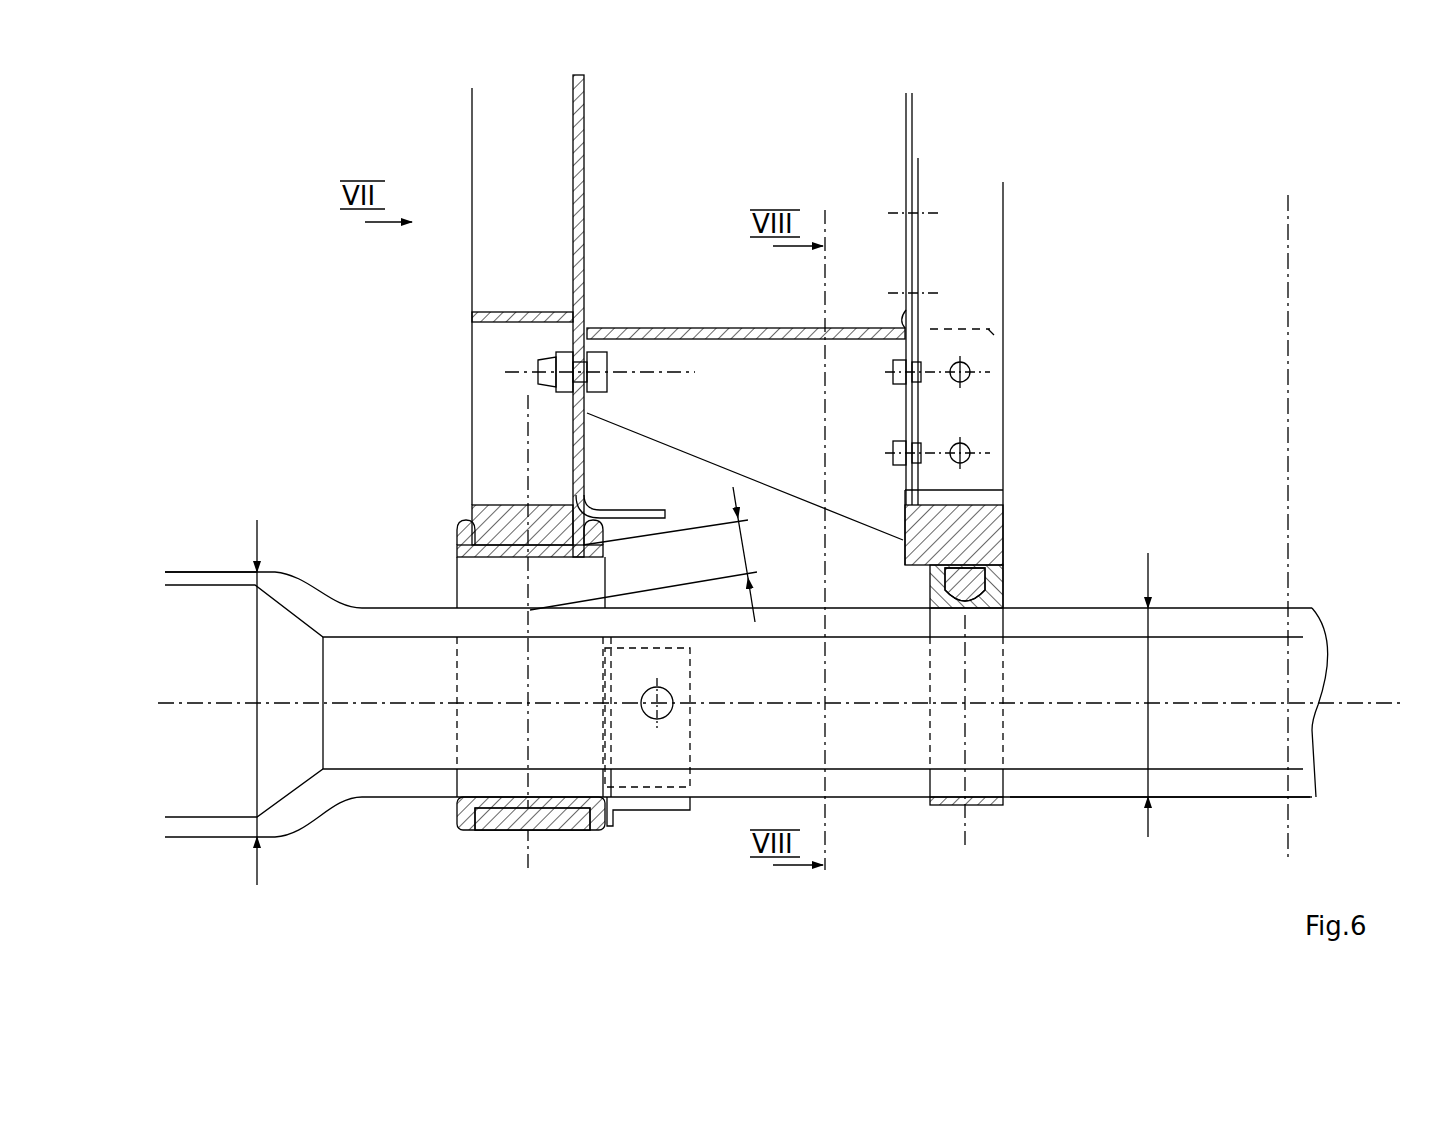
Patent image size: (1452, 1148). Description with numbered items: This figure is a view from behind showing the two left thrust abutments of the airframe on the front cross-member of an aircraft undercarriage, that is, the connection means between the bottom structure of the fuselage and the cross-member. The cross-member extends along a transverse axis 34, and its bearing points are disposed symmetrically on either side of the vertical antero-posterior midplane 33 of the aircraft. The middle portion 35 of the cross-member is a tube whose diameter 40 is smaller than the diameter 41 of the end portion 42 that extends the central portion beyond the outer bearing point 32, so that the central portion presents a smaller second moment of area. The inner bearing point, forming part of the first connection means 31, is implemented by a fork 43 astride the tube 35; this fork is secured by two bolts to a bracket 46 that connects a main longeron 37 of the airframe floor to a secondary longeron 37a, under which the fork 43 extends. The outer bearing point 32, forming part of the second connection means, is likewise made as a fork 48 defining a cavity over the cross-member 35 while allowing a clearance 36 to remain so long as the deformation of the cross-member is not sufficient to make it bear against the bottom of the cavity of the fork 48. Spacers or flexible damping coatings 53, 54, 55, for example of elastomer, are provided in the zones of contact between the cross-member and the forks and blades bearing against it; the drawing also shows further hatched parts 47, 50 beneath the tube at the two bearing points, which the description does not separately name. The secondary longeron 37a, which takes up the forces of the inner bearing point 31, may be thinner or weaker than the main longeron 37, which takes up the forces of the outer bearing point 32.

The first connection means 31 is at (1050, 382).
The outer bearing point 32 is at (405, 388).
The antero-posterior midplane 33 is at (1290, 375).
The transverse axis 34 is at (1363, 703).
The middle portion 35 is at (1050, 783).
The clearance 36 is at (742, 548).
The main longeron 37 is at (585, 195).
The secondary longeron 37a is at (905, 200).
The diameter 40 is at (1150, 572).
The diameter 41 is at (262, 520).
The end portion 42 is at (212, 578).
The fork 43 is at (1003, 575).
The bracket 46 is at (790, 437).
The weld plate 47 is at (968, 805).
The fork 48 is at (467, 522).
The lower plate 50 is at (540, 830).
The flexible damping coating 53 is at (1003, 600).
The flexible damping coating 54 is at (455, 548).
The flexible damping coating 55 is at (457, 812).